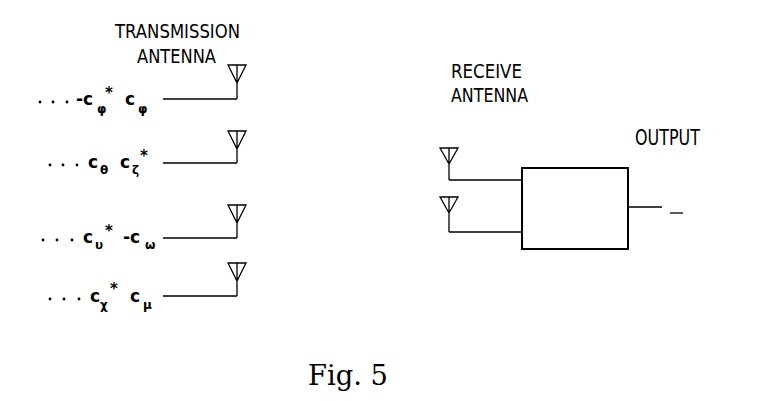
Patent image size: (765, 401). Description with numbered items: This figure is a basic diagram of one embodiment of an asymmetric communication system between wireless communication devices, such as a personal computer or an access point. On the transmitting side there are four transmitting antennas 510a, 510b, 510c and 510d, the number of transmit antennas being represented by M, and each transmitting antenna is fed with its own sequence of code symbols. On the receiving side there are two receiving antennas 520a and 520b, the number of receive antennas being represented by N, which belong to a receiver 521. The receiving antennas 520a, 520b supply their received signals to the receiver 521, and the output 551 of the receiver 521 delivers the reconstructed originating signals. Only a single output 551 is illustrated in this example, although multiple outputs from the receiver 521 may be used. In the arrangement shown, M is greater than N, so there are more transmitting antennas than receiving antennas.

The transmitting antenna 510a is at (237, 91).
The transmitting antenna 510b is at (239, 155).
The transmitting antenna 510c is at (239, 229).
The transmitting antenna 510d is at (239, 290).
The receiving antenna 520a is at (455, 147).
The receiving antenna 520b is at (456, 232).
The receiver 521 is at (600, 231).
The output 551 is at (644, 207).